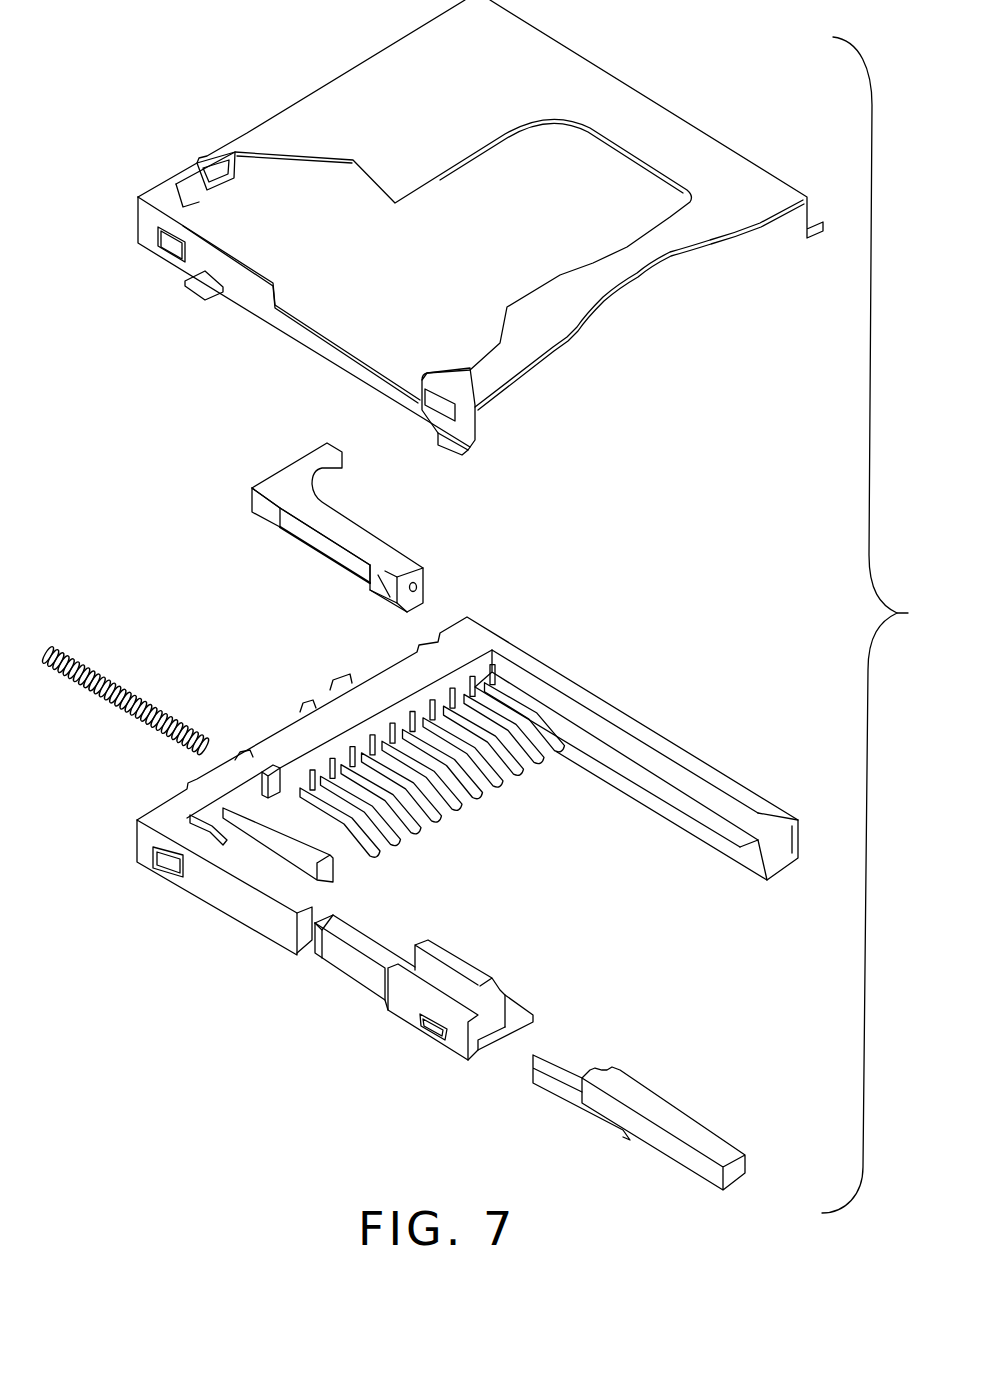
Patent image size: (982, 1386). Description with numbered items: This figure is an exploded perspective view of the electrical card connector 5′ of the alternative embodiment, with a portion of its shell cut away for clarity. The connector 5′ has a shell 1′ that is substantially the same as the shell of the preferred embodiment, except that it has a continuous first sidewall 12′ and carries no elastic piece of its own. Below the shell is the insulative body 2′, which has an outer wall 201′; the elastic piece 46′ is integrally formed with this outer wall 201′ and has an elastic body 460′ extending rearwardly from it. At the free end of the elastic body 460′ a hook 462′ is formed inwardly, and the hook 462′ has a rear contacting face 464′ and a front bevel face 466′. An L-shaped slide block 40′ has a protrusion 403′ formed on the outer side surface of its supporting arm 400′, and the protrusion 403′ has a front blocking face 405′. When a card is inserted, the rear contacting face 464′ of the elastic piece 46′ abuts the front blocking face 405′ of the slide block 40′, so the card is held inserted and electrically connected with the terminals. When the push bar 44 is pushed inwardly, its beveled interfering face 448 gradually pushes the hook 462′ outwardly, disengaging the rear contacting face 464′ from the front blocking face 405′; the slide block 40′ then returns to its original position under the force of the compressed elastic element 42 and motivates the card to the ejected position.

The shell 1′ is at (480, 227).
The first sidewall 12′ is at (252, 290).
The slide block 40′ is at (289, 547).
The supporting arm 400′ is at (332, 527).
The protrusion 403′ is at (373, 587).
The front blocking face 405′ is at (380, 600).
The elastic element 42 is at (100, 670).
The insulative body 2′ is at (660, 727).
The front bevel face 466′ is at (330, 925).
The rear contacting face 464′ is at (325, 922).
The hook 462′ is at (310, 953).
The elastic piece 46′ is at (344, 992).
The elastic body 460′ is at (372, 980).
The outer wall 201′ is at (410, 1008).
The beveled interfering face 448 is at (532, 1070).
The push bar 44 is at (610, 1140).
The electrical card connector 5′ is at (881, 625).